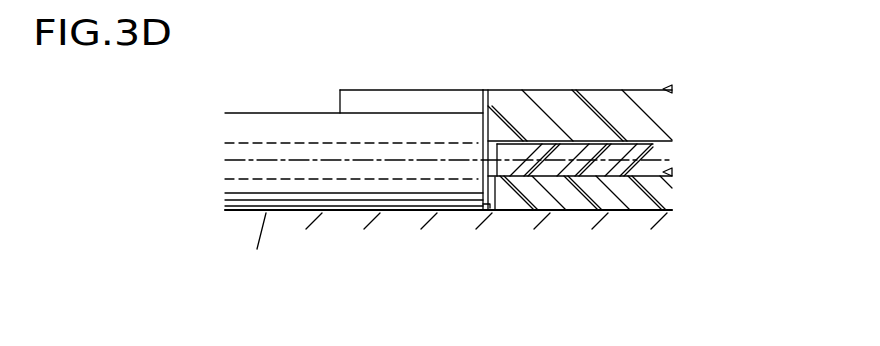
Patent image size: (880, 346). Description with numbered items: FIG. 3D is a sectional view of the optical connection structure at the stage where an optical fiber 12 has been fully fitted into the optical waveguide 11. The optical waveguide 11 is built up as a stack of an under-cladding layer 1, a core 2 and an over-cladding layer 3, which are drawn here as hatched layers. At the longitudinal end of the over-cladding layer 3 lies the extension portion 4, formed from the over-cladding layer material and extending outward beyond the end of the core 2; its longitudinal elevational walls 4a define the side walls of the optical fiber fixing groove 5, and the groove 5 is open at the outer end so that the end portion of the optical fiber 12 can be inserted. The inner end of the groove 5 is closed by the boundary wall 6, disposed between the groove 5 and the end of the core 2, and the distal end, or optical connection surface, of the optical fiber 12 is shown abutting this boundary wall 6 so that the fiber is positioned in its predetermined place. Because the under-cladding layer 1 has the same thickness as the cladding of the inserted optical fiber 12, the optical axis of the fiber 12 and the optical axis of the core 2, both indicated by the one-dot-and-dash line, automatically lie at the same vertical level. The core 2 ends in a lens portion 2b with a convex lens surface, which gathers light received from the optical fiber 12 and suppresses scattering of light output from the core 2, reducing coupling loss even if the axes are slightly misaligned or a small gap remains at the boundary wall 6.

The under-cladding layer 1 is at (652, 188).
The core 2 is at (648, 152).
The lens portion 2b is at (509, 154).
The over-cladding layer 3 is at (650, 110).
The extension portion 4 is at (485, 78).
The longitudinal elevational wall 4a is at (340, 102).
The optical fiber fixing groove 5 is at (393, 102).
The boundary wall 6 is at (490, 147).
The optical waveguide 11 is at (669, 84).
The optical fiber 12 is at (430, 161).